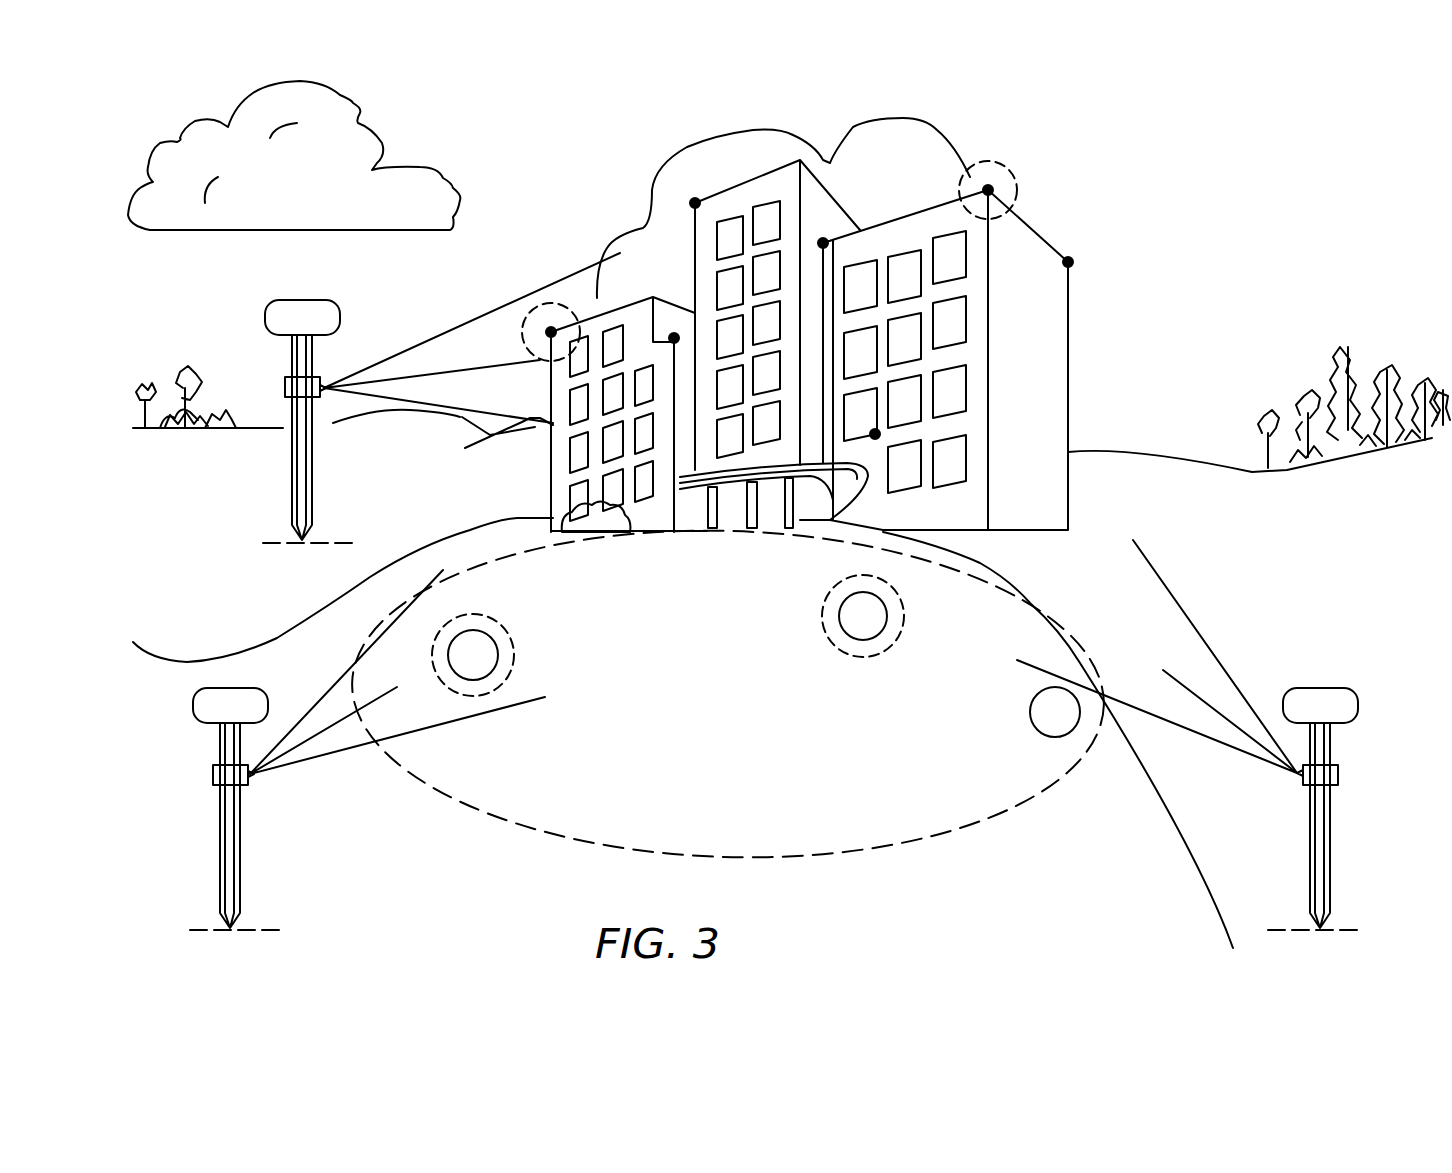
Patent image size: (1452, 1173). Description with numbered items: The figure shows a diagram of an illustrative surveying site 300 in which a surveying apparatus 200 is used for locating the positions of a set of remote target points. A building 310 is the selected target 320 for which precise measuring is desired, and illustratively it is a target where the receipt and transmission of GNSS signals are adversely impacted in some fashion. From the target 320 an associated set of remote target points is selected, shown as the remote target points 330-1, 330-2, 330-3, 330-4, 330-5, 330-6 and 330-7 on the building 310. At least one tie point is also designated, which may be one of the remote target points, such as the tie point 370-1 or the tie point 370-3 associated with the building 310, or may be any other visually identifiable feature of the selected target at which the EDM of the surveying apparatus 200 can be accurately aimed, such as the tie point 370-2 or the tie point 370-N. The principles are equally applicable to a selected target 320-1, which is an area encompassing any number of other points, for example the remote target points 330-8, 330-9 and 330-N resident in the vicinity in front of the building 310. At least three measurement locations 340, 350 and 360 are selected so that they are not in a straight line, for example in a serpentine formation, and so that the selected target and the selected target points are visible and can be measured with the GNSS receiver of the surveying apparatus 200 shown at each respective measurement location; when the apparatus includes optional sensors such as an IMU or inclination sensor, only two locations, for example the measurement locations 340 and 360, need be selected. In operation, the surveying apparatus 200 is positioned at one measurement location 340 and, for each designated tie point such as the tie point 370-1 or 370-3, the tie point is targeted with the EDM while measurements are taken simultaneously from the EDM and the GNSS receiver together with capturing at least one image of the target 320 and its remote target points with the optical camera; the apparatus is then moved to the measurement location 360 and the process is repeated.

The surveying site 300 is at (1284, 194).
The surveying apparatus 200 is at (265, 327).
The building 310 is at (1048, 405).
The target 320 is at (1100, 337).
The selected target 320-1 is at (817, 855).
The remote target point 330-1 is at (988, 190).
The remote target point 330-2 is at (1068, 262).
The remote target point 330-3 is at (875, 434).
The remote target point 330-4 is at (823, 243).
The remote target point 330-5 is at (695, 203).
The remote target point 330-6 is at (551, 332).
The remote target point 330-7 is at (674, 338).
The remote target point 330-8 is at (1037, 688).
The remote target point 330-9 is at (862, 641).
The remote target point 330-N is at (498, 665).
The tie point 370-1 is at (973, 173).
The tie point 370-2 is at (832, 590).
The tie point 370-3 is at (542, 302).
The tie point 370-N is at (510, 631).
The measurement location 340 is at (302, 542).
The measurement location 350 is at (229, 928).
The measurement location 360 is at (1321, 928).